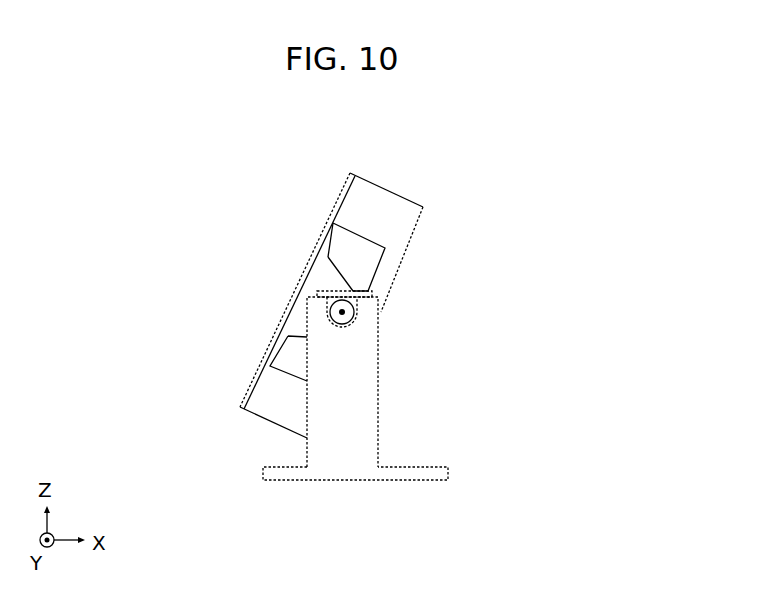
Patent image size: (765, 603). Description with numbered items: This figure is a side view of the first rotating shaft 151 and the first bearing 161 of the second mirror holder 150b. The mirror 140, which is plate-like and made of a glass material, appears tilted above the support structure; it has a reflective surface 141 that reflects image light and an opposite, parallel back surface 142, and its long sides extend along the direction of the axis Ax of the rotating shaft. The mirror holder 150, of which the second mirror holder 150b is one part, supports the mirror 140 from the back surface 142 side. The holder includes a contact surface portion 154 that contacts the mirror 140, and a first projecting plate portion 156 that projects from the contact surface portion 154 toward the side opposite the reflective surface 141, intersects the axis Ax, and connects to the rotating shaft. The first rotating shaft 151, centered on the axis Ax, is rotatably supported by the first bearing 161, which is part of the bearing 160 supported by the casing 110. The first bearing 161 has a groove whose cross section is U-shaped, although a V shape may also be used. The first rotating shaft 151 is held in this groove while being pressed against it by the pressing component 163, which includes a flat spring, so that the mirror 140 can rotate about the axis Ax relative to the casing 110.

The casing 110 is at (402, 472).
The mirror 140 is at (327, 276).
The reflective surface 141 is at (346, 188).
The back surface 142 is at (400, 225).
The mirror holder 150 is at (233, 302).
The second mirror holder 150b is at (328, 248).
The first rotating shaft 151 is at (391, 334).
The contact surface portion 154 is at (367, 263).
The first projecting plate portion 156 is at (325, 277).
The bearing 160 is at (421, 382).
The first bearing 161 is at (376, 375).
The pressing component 163 is at (383, 293).
The axis Ax is at (342, 315).